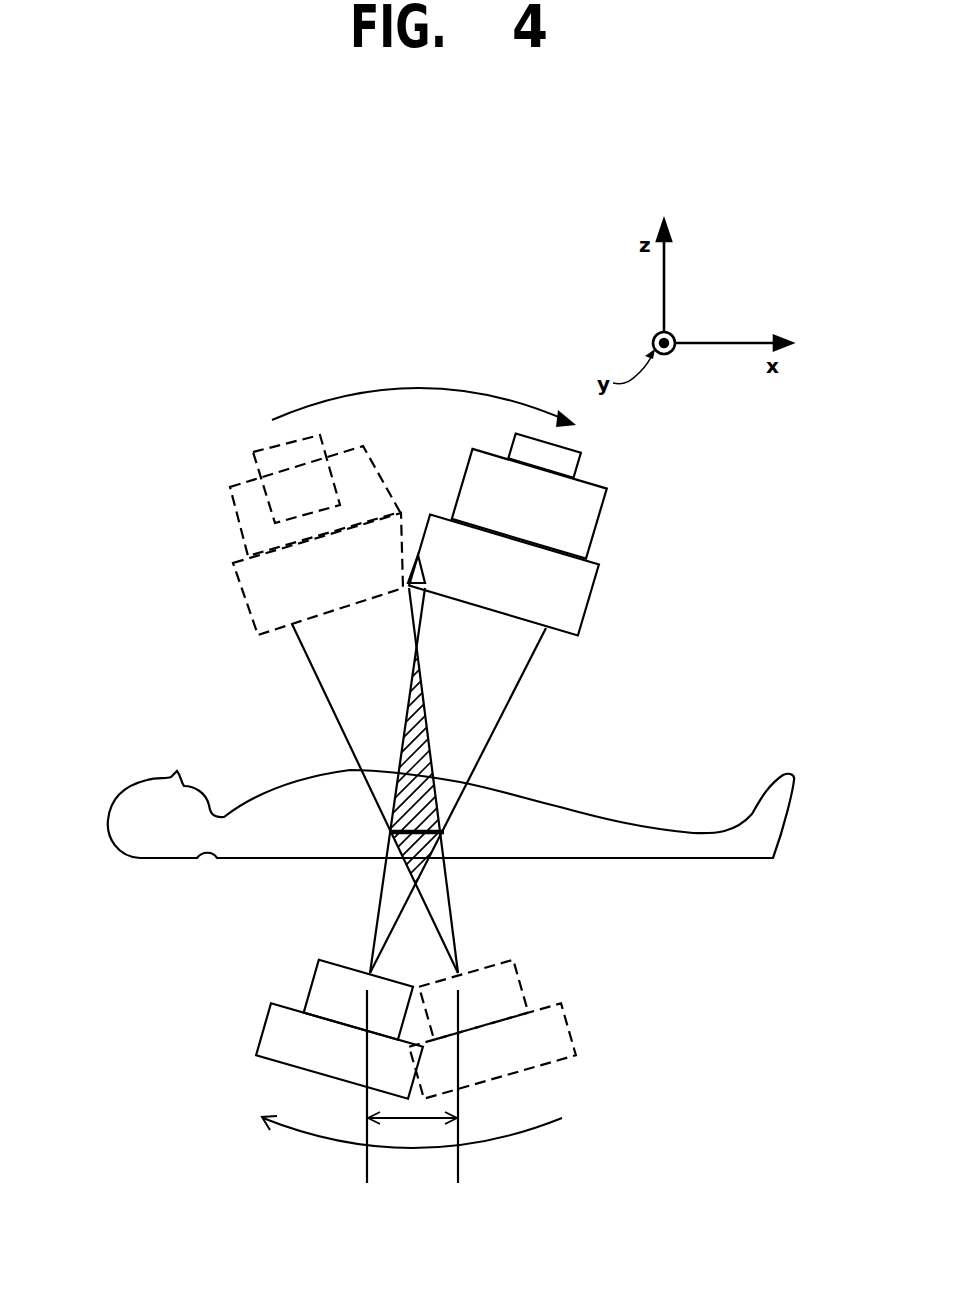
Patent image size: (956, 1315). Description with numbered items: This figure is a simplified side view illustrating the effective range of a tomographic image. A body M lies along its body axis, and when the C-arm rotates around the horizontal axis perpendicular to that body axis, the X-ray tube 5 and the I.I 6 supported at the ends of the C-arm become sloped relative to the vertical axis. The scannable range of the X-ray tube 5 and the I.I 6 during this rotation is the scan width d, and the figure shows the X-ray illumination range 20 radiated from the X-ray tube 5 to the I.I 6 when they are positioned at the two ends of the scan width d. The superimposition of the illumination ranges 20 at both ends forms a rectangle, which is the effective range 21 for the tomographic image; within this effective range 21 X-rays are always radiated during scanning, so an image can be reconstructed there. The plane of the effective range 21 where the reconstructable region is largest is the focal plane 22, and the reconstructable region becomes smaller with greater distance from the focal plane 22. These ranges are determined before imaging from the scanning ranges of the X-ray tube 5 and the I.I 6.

The X-ray tube 5 is at (277, 1027).
The I.I 6 is at (573, 537).
The X-ray illumination range 20 is at (327, 672).
The effective range 21 is at (407, 730).
The focal plane 22 is at (397, 780).
The body M is at (520, 798).
The scan width d is at (420, 1120).